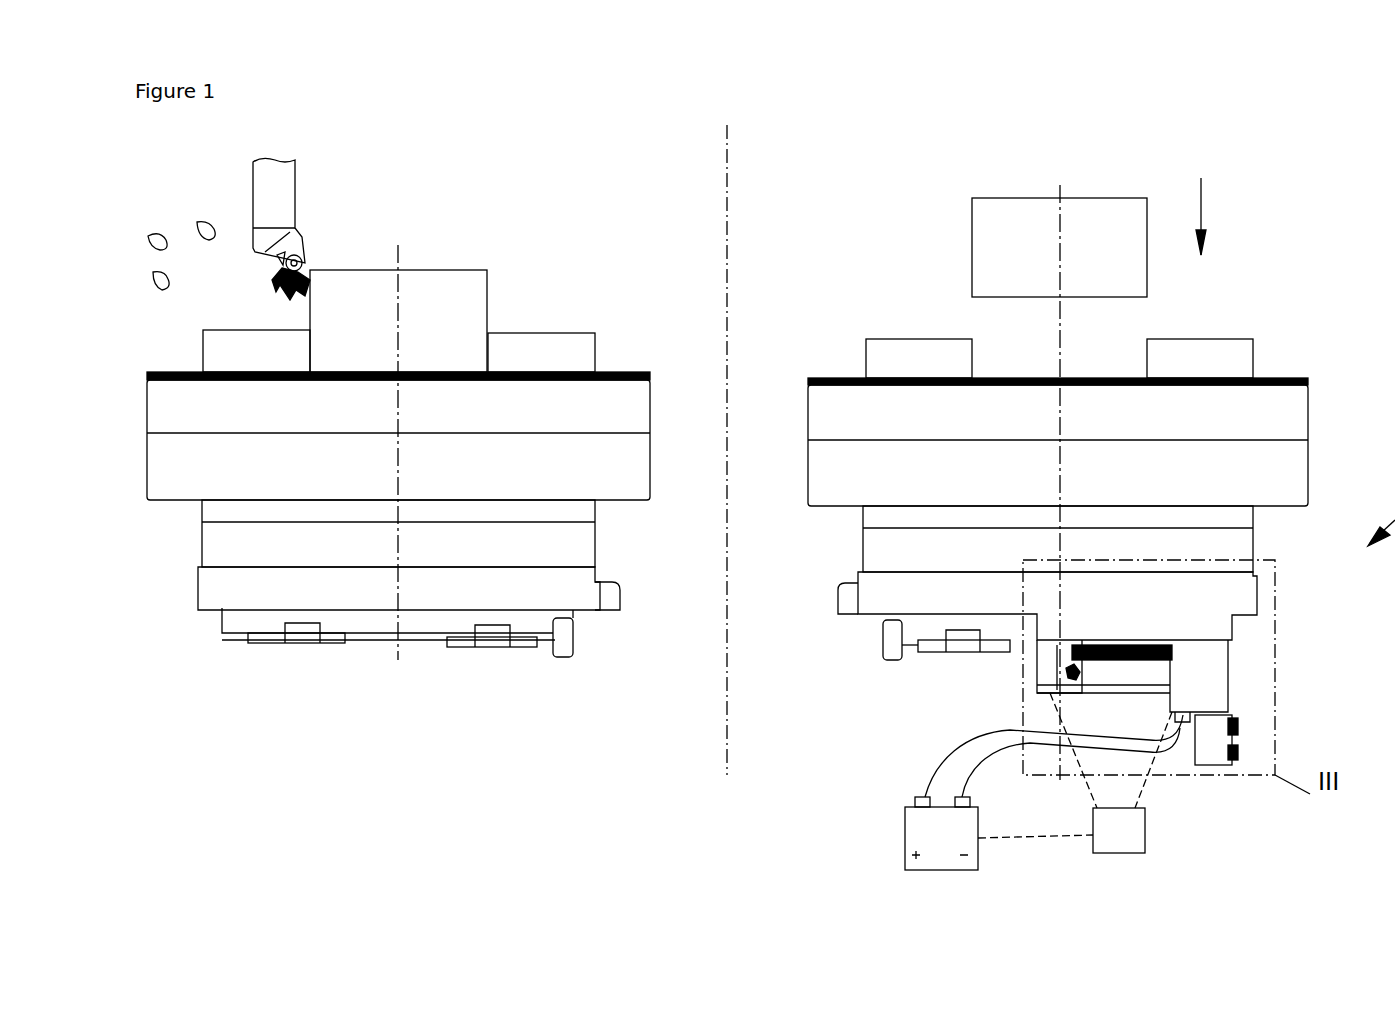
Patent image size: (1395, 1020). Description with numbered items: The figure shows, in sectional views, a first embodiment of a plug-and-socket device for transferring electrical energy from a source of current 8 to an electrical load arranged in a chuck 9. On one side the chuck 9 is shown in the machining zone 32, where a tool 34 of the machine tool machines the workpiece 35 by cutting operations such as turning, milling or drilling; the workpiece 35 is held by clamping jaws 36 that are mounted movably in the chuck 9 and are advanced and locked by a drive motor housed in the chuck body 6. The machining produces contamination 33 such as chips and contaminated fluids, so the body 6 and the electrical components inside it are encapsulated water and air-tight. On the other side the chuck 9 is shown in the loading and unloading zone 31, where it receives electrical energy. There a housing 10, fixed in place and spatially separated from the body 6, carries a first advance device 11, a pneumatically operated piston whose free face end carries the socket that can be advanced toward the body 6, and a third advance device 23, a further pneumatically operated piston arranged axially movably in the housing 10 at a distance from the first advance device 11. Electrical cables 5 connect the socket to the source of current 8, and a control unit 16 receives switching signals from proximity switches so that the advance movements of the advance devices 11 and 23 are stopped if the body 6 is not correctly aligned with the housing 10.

The loading and unloading zone 31 is at (1075, 89).
The machining zone 32 is at (368, 802).
The coolant / chips 33 is at (307, 262).
The tool 34 is at (285, 200).
The workpiece 35 is at (440, 295).
The clamping jaws 36 is at (578, 350).
The chuck 9 is at (178, 465).
The body 6 is at (1225, 606).
The housing 10 is at (1212, 675).
The first advance device 11 is at (1212, 699).
The third advance device 23 is at (1040, 668).
The electrical cables 5 is at (935, 752).
The source of current 8 is at (905, 820).
The control unit 16 is at (1145, 835).